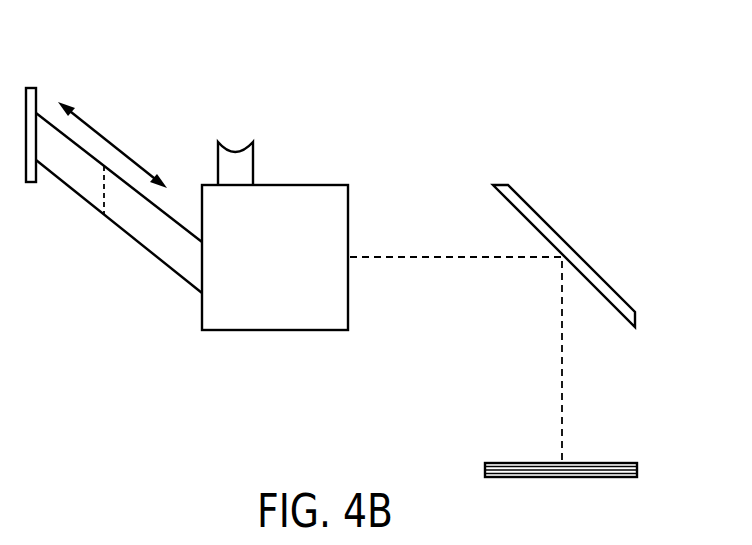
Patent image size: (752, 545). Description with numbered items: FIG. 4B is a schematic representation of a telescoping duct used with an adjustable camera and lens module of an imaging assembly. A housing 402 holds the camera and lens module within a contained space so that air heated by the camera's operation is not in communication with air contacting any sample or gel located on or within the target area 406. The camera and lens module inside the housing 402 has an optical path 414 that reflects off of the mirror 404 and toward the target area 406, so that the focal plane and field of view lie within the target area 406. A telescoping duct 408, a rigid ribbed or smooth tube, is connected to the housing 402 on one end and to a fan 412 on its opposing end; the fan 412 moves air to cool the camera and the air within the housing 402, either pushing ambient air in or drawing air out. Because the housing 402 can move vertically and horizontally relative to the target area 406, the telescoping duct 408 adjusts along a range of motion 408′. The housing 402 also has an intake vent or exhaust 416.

The housing 402 is at (287, 183).
The mirror 404 is at (570, 248).
The target area 406 is at (637, 470).
The telescoping duct 408 is at (138, 245).
The range of motion 408′ is at (110, 143).
The fan 412 is at (31, 88).
The optical path 414 is at (438, 255).
The intake vent or exhaust 416 is at (236, 150).